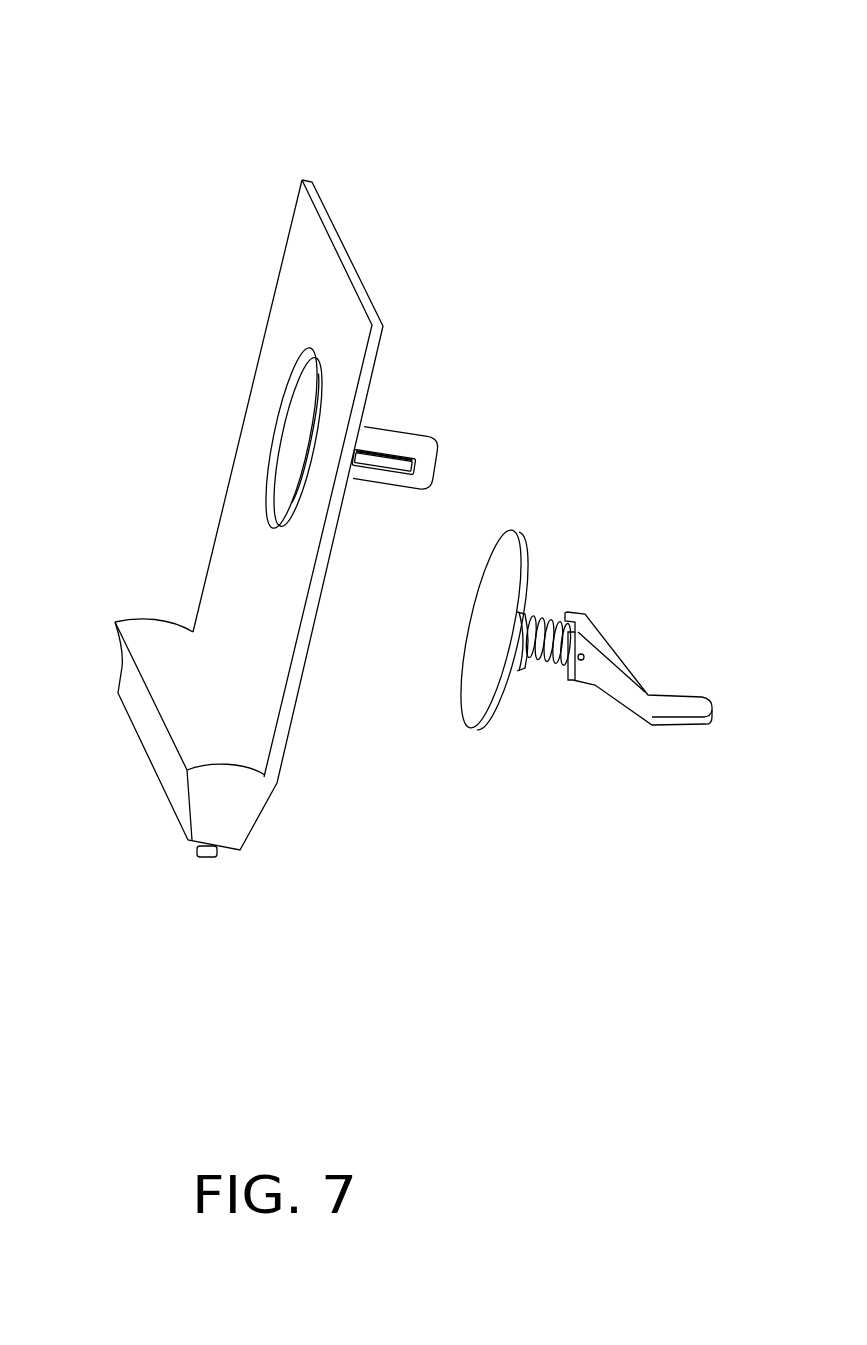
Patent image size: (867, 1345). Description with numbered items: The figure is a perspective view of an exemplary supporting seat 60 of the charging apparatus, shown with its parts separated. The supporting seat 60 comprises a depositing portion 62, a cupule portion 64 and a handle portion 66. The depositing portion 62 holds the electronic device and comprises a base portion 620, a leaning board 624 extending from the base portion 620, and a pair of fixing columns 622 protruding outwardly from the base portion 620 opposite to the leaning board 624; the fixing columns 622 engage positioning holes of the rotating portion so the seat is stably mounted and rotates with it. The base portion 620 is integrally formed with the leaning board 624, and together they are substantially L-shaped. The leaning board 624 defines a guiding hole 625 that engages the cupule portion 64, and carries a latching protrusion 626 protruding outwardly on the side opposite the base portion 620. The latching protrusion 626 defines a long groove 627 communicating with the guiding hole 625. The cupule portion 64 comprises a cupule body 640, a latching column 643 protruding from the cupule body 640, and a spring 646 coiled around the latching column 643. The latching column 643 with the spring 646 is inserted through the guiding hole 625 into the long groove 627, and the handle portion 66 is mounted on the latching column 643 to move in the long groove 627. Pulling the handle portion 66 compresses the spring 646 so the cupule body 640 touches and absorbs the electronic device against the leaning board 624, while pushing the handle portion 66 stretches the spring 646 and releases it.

The supporting seat 60 is at (318, 44).
The depositing portion 62 is at (187, 368).
The base portion 620 is at (233, 808).
The fixing columns 622 is at (208, 858).
The leaning board 624 is at (322, 275).
The guiding hole 625 is at (298, 457).
The latching protrusion 626 is at (393, 443).
The long groove 627 is at (382, 467).
The cupule portion 64 is at (520, 518).
The cupule body 640 is at (477, 700).
The latching column 643 is at (528, 657).
The spring 646 is at (550, 653).
The handle portion 66 is at (673, 708).